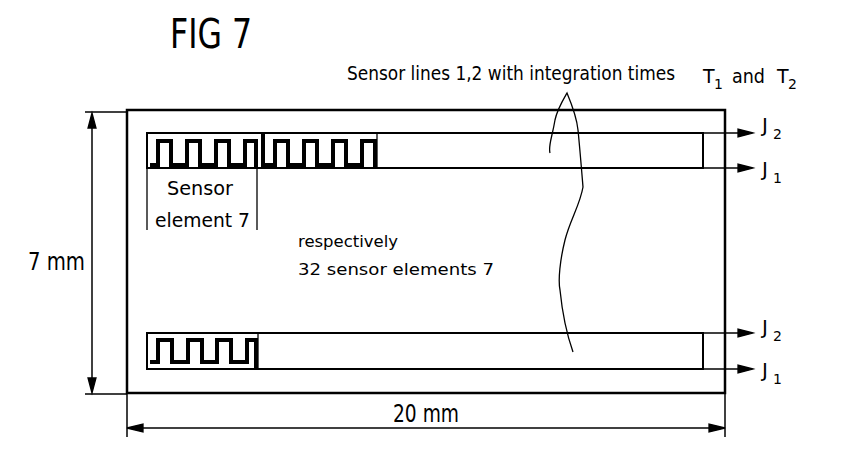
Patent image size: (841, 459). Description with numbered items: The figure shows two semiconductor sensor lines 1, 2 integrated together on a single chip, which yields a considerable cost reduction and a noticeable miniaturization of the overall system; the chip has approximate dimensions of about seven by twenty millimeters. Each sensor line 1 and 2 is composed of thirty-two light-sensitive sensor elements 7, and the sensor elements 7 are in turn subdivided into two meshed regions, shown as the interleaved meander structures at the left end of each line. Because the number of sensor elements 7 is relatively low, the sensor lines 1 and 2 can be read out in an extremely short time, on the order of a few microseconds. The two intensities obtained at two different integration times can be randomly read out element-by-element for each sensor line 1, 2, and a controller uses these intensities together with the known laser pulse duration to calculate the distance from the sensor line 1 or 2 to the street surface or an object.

The sensor line 1 is at (684, 168).
The sensor line 2 is at (686, 333).
The sensor element 7 is at (192, 333).